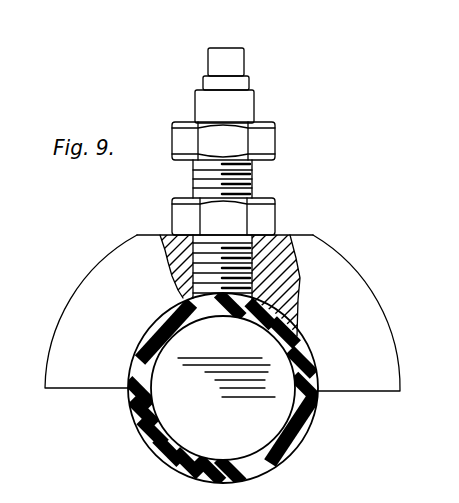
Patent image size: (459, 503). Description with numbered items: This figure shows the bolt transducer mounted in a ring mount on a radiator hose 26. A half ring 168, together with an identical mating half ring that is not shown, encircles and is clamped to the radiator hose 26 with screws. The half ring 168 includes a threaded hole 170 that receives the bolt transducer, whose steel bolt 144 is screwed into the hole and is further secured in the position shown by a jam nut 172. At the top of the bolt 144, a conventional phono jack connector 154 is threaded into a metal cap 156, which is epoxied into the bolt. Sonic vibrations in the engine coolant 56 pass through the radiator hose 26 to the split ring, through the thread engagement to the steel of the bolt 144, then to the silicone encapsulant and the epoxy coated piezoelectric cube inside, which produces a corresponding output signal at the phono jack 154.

The radiator hose 26 is at (138, 432).
The engine coolant 56 is at (243, 397).
The bolt 144 is at (252, 172).
The phono jack connector 154 is at (244, 55).
The metal cap 156 is at (254, 100).
The half ring 168 is at (118, 242).
The threaded hole 170 is at (250, 251).
The jam nut 172 is at (275, 207).